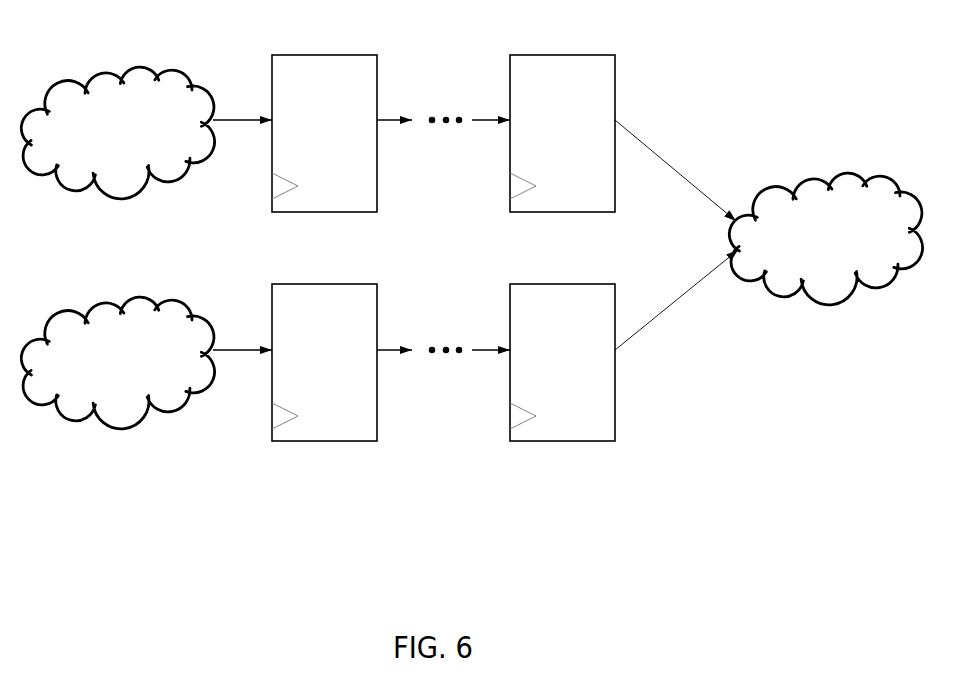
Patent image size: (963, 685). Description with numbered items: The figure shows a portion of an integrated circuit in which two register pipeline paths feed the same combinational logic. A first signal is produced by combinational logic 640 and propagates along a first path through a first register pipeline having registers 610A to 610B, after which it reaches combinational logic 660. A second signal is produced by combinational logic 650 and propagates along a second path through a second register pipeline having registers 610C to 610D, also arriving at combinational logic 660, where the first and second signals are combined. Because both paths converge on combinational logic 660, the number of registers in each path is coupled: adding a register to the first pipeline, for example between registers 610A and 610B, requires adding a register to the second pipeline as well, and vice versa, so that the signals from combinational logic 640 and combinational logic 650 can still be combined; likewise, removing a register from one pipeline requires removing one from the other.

The combinational logic 640 is at (137, 70).
The combinational logic 650 is at (137, 300).
The combinational logic 660 is at (846, 176).
The register 610A is at (322, 55).
The register 610B is at (562, 55).
The register 610C is at (322, 284).
The register 610D is at (562, 284).